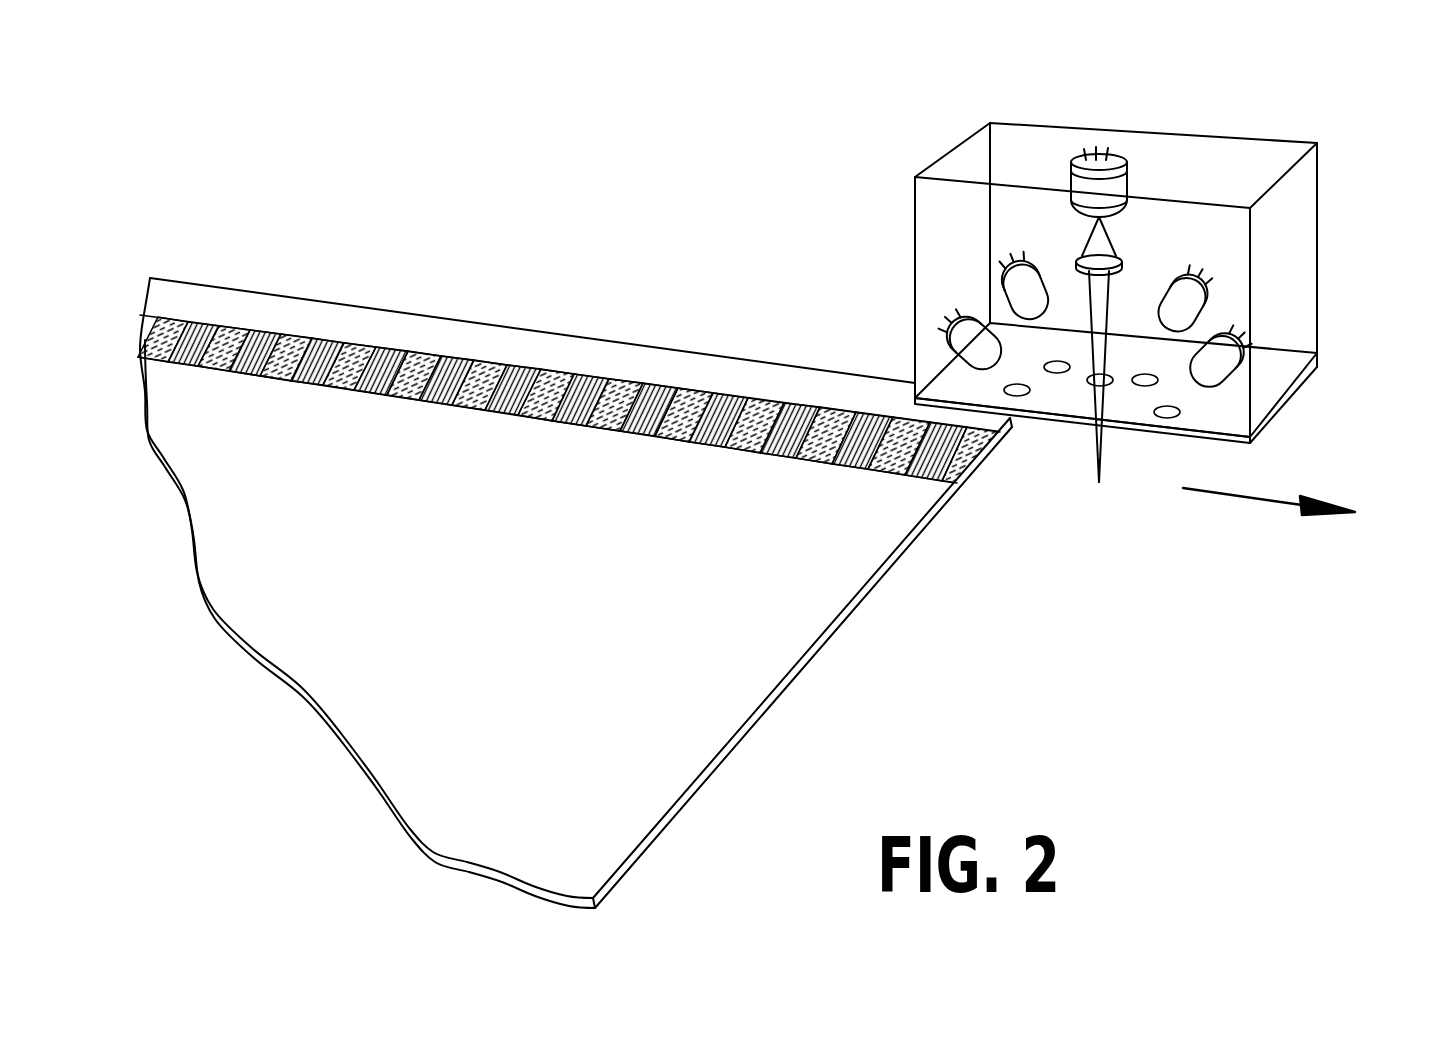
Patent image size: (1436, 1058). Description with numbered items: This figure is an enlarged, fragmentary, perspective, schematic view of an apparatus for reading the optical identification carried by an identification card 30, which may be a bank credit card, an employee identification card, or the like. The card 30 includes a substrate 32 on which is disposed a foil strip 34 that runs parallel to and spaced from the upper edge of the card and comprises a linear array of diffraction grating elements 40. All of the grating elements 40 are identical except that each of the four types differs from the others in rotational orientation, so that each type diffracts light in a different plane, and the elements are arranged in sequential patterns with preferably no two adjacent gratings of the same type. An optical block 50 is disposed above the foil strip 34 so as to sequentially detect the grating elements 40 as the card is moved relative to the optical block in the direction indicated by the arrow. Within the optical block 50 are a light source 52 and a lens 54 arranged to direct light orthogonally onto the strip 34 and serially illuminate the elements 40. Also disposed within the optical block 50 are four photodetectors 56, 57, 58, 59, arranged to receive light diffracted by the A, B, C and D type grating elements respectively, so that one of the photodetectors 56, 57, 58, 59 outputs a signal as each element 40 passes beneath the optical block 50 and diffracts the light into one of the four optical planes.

The identification card 30 is at (288, 802).
The substrate 32 is at (653, 790).
The foil strip 34 is at (270, 335).
The diffraction grating elements 40 is at (773, 410).
The optical block 50 is at (968, 156).
The light source 52 is at (1082, 150).
The lens 54 is at (1120, 258).
The photodetector 56 is at (1317, 367).
The photodetector 57 is at (1207, 293).
The photodetector 58 is at (1000, 277).
The photodetector 59 is at (950, 333).